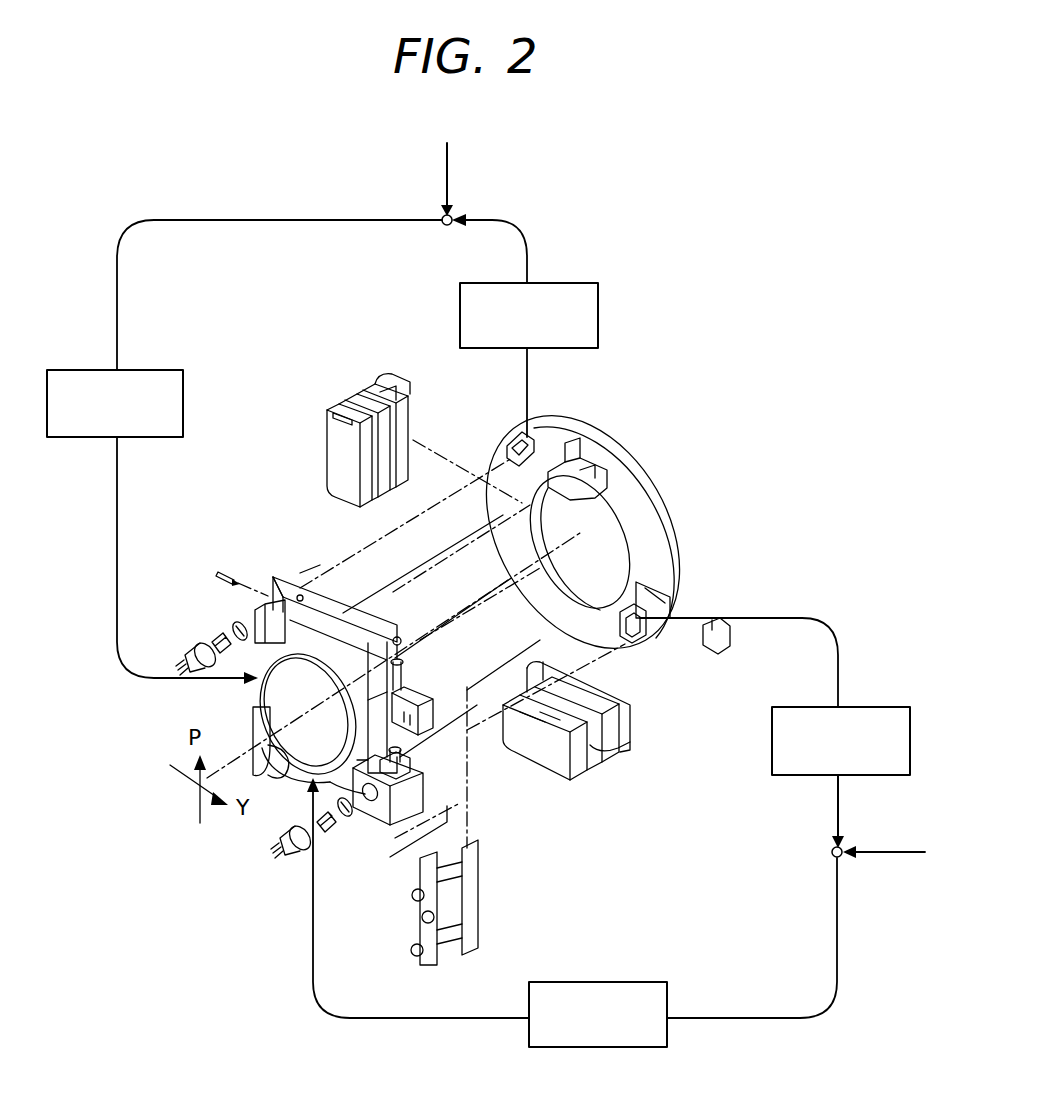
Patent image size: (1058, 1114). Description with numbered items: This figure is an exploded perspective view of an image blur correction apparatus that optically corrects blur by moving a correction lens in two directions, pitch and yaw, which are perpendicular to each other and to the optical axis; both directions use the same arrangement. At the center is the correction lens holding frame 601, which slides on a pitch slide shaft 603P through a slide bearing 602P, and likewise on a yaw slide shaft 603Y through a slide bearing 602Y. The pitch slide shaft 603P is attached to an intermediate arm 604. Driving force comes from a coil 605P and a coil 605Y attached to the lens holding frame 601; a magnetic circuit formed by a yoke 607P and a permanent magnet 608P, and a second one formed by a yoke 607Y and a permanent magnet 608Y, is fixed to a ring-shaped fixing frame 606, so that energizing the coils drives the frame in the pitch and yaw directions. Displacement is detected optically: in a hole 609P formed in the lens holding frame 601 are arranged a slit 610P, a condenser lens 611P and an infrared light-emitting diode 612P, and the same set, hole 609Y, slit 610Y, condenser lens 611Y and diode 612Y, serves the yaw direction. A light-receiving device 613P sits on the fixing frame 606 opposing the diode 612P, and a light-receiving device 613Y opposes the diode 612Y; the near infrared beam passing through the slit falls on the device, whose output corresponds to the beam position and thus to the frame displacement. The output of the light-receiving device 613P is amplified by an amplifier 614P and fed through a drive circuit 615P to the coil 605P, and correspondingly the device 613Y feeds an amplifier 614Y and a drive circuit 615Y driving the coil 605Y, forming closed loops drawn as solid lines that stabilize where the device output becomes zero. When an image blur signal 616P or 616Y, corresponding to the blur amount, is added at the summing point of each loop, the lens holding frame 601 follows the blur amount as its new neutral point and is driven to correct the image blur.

The correction lens holding frame 601 is at (310, 777).
The yaw slide bearing 602Y is at (316, 586).
The pitch slide bearing 602P is at (443, 638).
The yaw slide shaft 603Y is at (346, 610).
The pitch slide shaft 603P is at (413, 682).
The intermediate arm 604 is at (397, 626).
The yaw coil 605Y is at (258, 692).
The pitch coil 605P is at (320, 818).
The fixing frame 606 is at (666, 512).
The yaw yoke 607Y is at (344, 397).
The pitch yoke 607P is at (613, 762).
The yaw permanent magnet 608Y is at (342, 410).
The pitch permanent magnet 608P is at (575, 780).
The yaw hole 609Y is at (257, 588).
The pitch hole 609P is at (369, 800).
The yaw slit 610Y is at (236, 622).
The pitch slit 610P is at (347, 818).
The yaw condenser lens 611Y is at (217, 638).
The pitch condenser lens 611P is at (327, 836).
The yaw infrared light-emitting diode (IRED) 612Y is at (196, 645).
The pitch infrared light-emitting diode (IRED) 612P is at (290, 858).
The yaw light-receiving device (PSD) 613Y is at (538, 442).
The pitch light-receiving device (PSD) 613P is at (633, 645).
The yaw amplifier 614Y is at (566, 283).
The pitch amplifier 614P is at (885, 707).
The yaw drive circuit 615Y is at (158, 370).
The pitch drive circuit 615P is at (636, 982).
The yaw image blur signal 616Y is at (447, 172).
The pitch image blur signal 616P is at (887, 852).